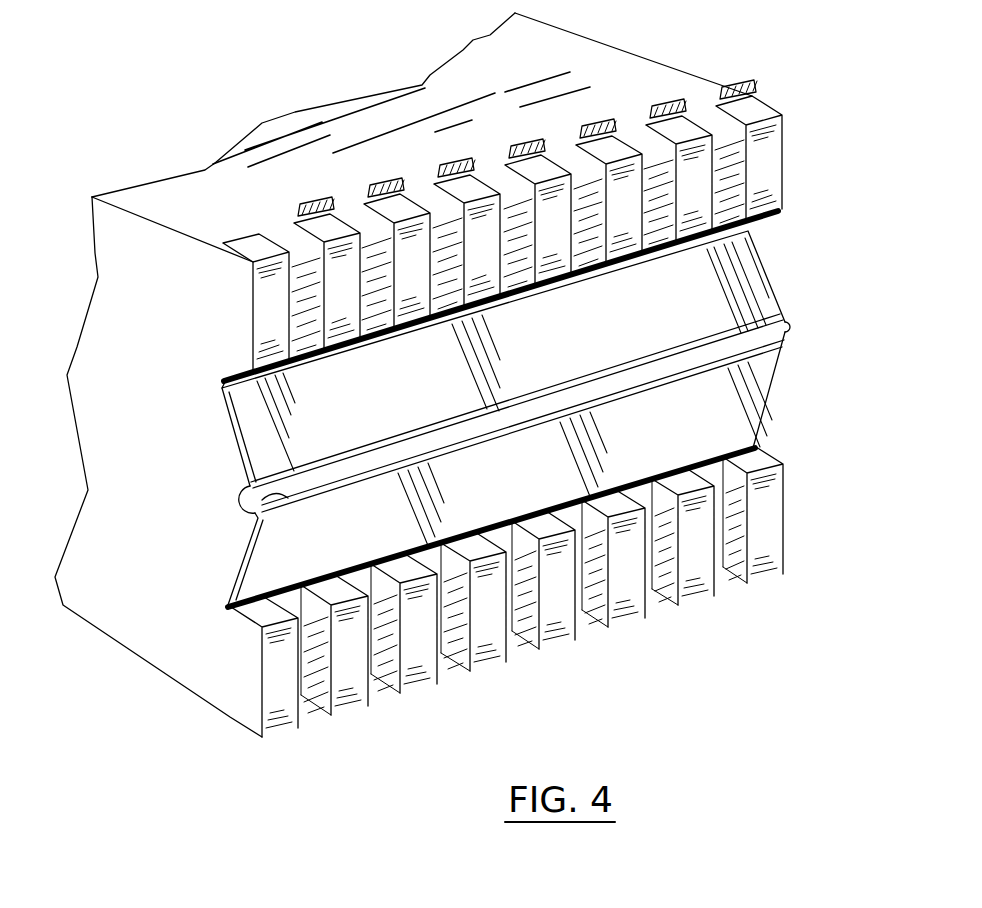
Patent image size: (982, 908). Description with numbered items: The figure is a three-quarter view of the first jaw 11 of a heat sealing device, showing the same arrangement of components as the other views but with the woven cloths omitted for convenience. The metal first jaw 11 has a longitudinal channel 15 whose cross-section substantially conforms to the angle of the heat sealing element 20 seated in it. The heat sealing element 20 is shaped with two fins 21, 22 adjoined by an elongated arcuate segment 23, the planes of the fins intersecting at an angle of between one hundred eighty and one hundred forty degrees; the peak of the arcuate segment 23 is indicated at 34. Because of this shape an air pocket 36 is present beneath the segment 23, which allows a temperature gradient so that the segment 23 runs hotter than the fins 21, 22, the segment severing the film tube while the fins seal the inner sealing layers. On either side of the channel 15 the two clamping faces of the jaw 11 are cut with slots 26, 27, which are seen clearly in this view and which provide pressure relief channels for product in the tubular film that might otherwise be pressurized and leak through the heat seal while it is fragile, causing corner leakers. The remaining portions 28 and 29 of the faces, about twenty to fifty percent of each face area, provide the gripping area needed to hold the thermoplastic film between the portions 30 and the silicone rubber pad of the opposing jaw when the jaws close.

The first jaw 11 is at (130, 339).
The longitudinal channel 15 is at (237, 450).
The heat sealing element 20 is at (507, 476).
The fin 21 is at (766, 383).
The fin 22 is at (760, 290).
The arcuate segment 23 is at (792, 326).
The slot 26 is at (312, 716).
The slot 27 is at (268, 226).
The portion of the face 28 is at (265, 687).
The portion of the face 29 is at (255, 324).
The portions 30 is at (245, 373).
The peak 34 is at (286, 498).
The air pocket 36 is at (249, 508).